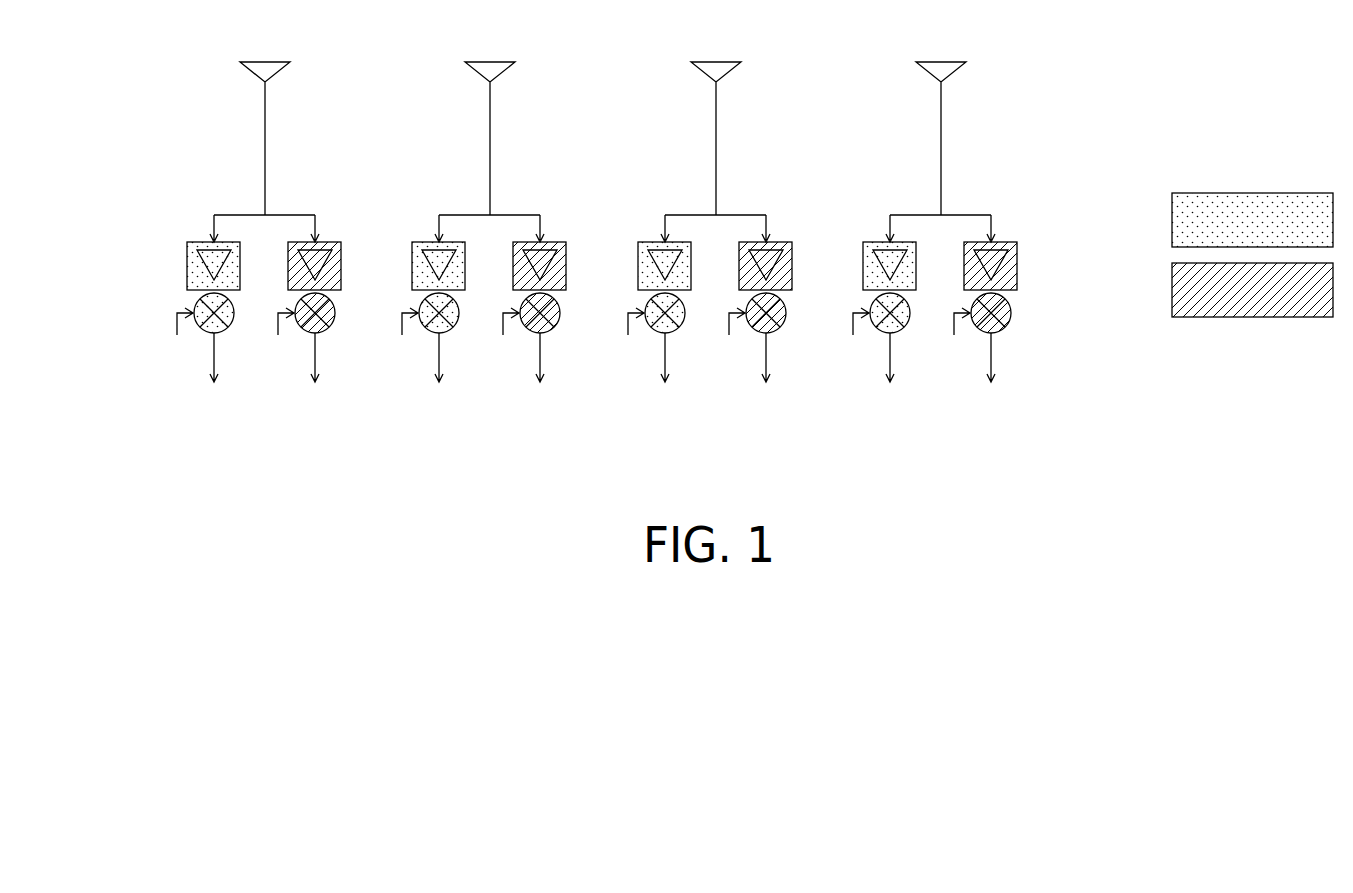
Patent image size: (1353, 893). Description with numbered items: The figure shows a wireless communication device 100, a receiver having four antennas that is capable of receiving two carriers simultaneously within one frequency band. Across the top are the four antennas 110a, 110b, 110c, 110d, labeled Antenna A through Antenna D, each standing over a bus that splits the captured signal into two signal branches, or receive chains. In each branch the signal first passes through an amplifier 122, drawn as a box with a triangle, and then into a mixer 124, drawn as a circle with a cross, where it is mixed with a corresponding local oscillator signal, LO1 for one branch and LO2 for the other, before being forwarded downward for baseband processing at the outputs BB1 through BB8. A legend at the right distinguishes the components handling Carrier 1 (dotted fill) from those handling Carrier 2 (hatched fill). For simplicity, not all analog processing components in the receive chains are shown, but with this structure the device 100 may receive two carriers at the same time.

The wireless communication device 100 is at (1228, 61).
The antenna 110a is at (278, 69).
The antenna 110b is at (503, 69).
The antenna 110c is at (729, 69).
The antenna 110d is at (954, 69).
The amplifier 122 is at (192, 241).
The mixer 124 is at (198, 301).